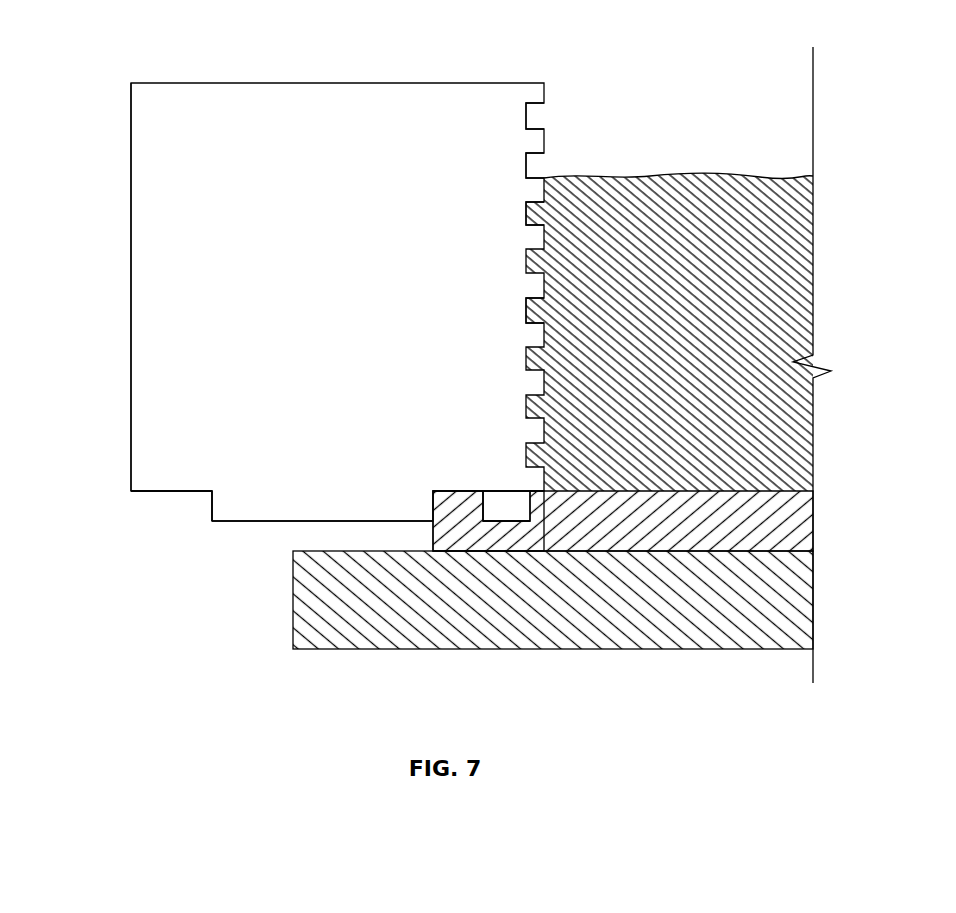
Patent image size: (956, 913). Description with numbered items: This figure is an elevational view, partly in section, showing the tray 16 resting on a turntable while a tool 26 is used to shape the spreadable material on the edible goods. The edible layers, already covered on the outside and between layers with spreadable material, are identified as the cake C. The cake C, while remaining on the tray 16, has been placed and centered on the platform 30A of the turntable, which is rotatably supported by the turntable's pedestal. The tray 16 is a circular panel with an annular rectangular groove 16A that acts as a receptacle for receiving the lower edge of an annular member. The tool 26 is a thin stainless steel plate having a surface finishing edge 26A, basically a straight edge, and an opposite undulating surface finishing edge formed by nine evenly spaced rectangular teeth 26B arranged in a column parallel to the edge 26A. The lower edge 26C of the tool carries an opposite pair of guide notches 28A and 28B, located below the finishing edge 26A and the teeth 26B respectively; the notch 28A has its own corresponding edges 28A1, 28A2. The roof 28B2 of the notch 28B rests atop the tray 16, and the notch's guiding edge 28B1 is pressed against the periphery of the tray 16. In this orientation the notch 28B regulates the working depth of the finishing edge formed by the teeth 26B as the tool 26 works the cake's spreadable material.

The tool 26 is at (324, 80).
The surface finishing edge 26A is at (131, 135).
The rectangular teeth 26B is at (544, 96).
The lower edge 26C is at (268, 523).
The guide notch 28A is at (224, 484).
The vertical face of step 28A1 is at (212, 512).
The horizontal face of step 28A2 is at (165, 492).
The guide notch 28B is at (430, 491).
The guiding edge 28B1 is at (442, 507).
The roof 28B2 is at (499, 490).
The tray 16 is at (796, 558).
The annular rectangular groove 16A is at (512, 523).
The platform 30A is at (540, 650).
The cake C is at (699, 174).